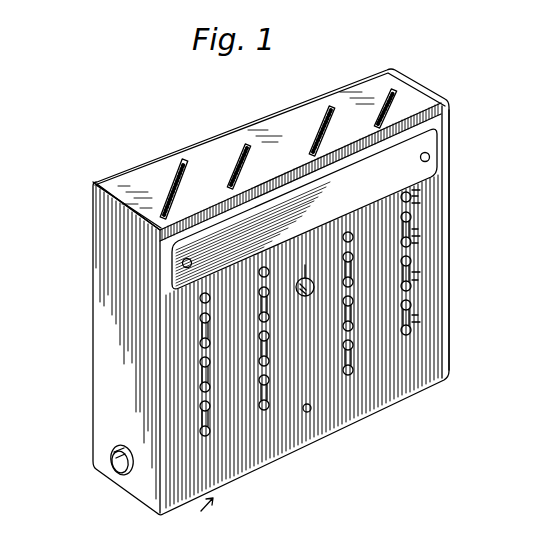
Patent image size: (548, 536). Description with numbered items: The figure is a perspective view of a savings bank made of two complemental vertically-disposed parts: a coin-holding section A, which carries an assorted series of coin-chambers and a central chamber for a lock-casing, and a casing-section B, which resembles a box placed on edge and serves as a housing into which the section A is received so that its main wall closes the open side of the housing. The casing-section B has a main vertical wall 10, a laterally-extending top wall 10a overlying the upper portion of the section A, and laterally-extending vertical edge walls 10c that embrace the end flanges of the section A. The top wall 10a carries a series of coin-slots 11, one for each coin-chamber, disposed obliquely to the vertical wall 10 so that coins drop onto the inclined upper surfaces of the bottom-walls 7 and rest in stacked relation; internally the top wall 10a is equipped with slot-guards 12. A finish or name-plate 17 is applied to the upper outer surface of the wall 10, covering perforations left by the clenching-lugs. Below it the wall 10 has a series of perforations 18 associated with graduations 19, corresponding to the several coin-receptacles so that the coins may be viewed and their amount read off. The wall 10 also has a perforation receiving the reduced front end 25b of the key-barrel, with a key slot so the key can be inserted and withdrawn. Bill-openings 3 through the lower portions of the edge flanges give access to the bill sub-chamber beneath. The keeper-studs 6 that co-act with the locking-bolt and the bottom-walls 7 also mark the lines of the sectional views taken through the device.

The coin-holding section A is at (92, 220).
The casing-section B is at (452, 213).
The bill-openings 3 is at (121, 443).
The keeper-studs 6 is at (214, 509).
The bottom-walls 7 is at (307, 392).
The vertical wall 10 is at (453, 283).
The top wall 10a is at (346, 96).
The vertical edge walls 10c is at (110, 322).
The coin-slots 11 is at (171, 176).
The slot-guards 12 is at (318, 132).
The name-plate 17 is at (431, 167).
The perforations 18 is at (409, 327).
The graduations 19 is at (417, 238).
The reduced front end of key-barrel 25b is at (304, 297).